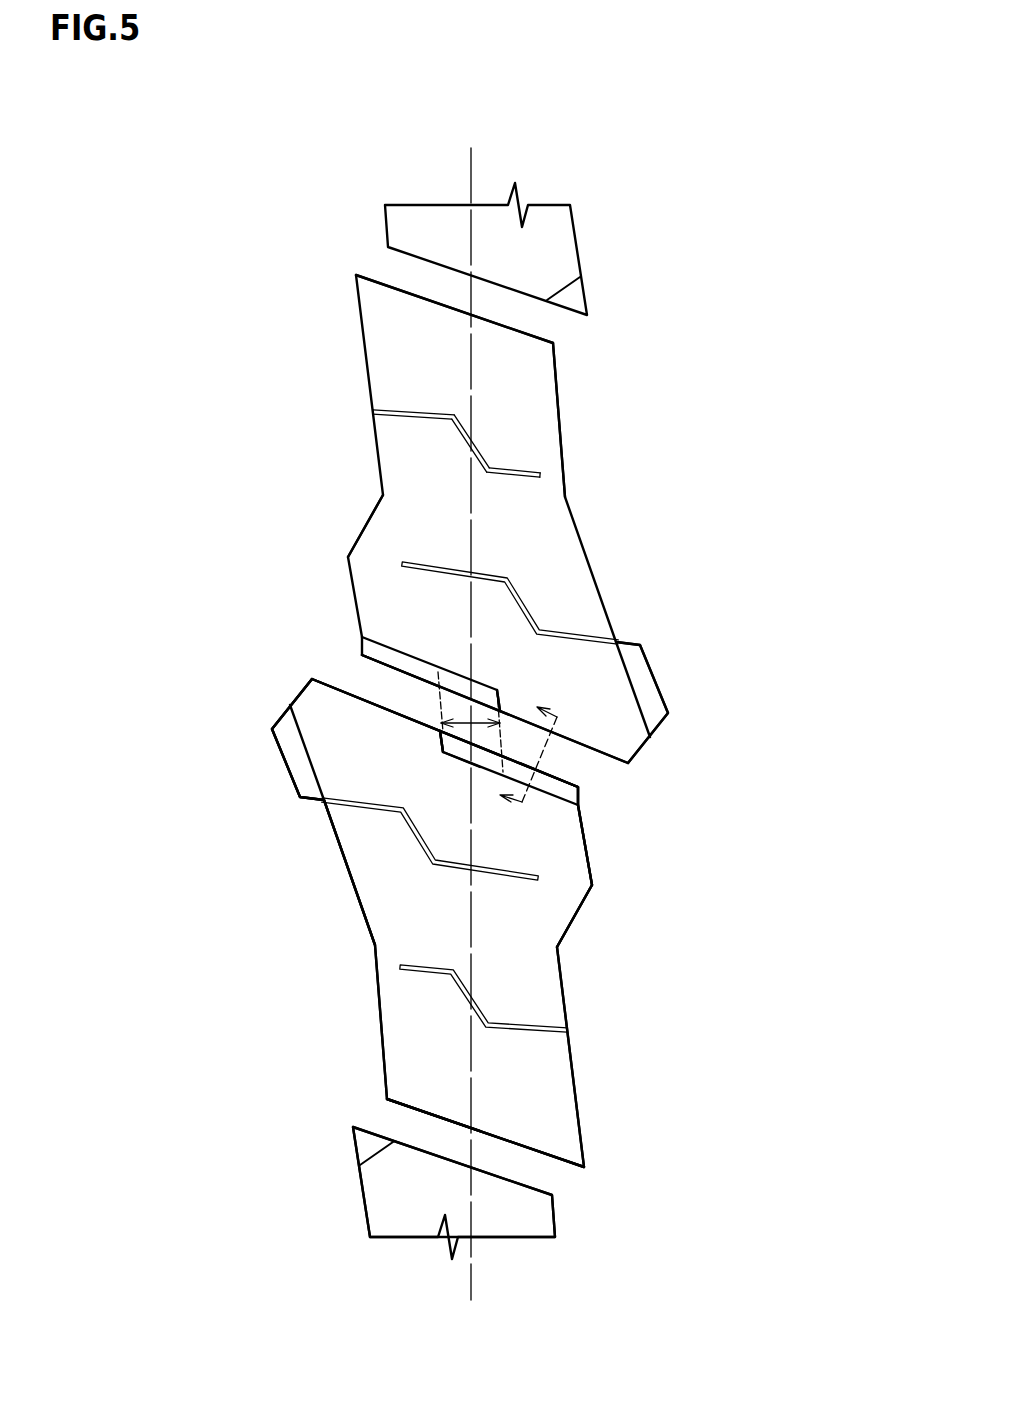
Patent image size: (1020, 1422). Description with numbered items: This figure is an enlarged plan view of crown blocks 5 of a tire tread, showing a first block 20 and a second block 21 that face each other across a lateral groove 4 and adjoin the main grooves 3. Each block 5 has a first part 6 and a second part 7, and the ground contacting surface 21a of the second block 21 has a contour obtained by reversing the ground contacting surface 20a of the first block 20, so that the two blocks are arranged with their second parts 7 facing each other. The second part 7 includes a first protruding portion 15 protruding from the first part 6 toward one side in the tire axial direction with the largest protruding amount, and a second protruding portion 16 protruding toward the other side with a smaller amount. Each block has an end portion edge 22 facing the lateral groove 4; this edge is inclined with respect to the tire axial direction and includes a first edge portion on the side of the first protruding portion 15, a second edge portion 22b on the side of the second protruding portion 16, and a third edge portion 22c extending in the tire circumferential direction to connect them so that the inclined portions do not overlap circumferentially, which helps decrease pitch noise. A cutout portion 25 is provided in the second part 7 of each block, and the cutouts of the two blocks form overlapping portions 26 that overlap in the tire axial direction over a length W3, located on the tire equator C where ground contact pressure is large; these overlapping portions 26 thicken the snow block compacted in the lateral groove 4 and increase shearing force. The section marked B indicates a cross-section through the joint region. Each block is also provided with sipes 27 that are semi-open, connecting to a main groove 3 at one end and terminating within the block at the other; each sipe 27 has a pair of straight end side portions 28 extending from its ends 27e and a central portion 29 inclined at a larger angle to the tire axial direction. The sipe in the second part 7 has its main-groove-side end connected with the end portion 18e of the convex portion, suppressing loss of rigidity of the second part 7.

The main groove 3 is at (340, 1041).
The lateral groove 4 is at (388, 687).
The block 5 is at (527, 378).
The first part 6 is at (497, 352).
The second part 7 is at (378, 542).
The first protruding portion 15 is at (362, 763).
The second protruding portion 16 is at (558, 848).
The end portion of the convex portion 18e is at (612, 642).
The first block 20 is at (400, 1200).
The ground contacting surface of the first block 20a is at (528, 437).
The second block 21 is at (545, 248).
The ground contacting surface of the second block 21a is at (417, 915).
The end portion edge 22 is at (612, 762).
The second edge portion 22b is at (580, 793).
The third edge portion 22c is at (455, 752).
The cutout portion 25 is at (432, 653).
The overlapping portion 26 is at (487, 683).
The sipe 27 is at (203, 287).
The sipe end 27e is at (373, 410).
The end side portion 28 is at (413, 412).
The central portion 29 is at (460, 440).
The length of the overlapping portions W3 is at (462, 717).
The section line B is at (523, 756).
The tire equator C is at (471, 709).